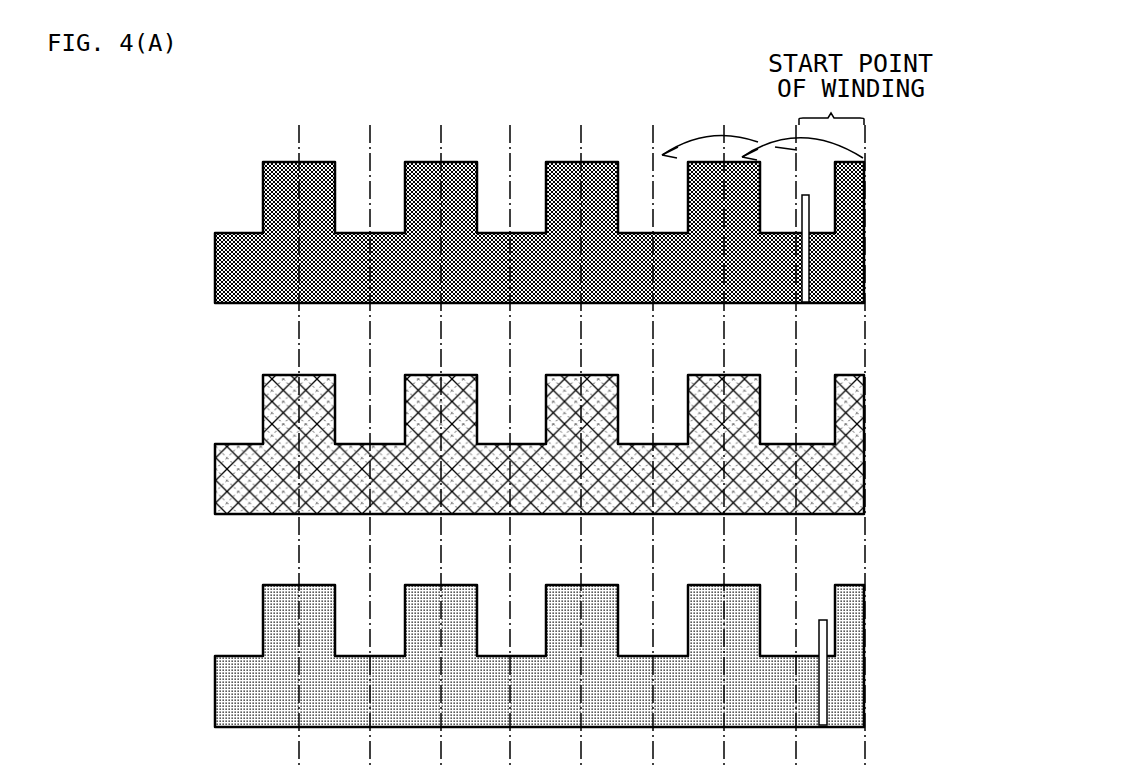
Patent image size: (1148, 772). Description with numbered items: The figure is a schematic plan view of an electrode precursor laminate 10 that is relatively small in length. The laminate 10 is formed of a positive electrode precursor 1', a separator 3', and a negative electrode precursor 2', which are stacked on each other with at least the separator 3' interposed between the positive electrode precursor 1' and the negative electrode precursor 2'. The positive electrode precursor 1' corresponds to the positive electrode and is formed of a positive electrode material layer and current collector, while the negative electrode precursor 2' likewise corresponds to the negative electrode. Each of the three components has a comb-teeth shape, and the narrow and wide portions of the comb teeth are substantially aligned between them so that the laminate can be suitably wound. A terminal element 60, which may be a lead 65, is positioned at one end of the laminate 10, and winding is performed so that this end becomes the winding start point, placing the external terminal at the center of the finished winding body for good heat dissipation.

The electrode precursor laminate 10 is at (197, 743).
The positive electrode precursor 1' is at (522, 232).
The separator 3' is at (522, 444).
The negative electrode precursor 2' is at (524, 656).
The terminal element 60 is at (873, 454).
The lead 65 is at (806, 207).